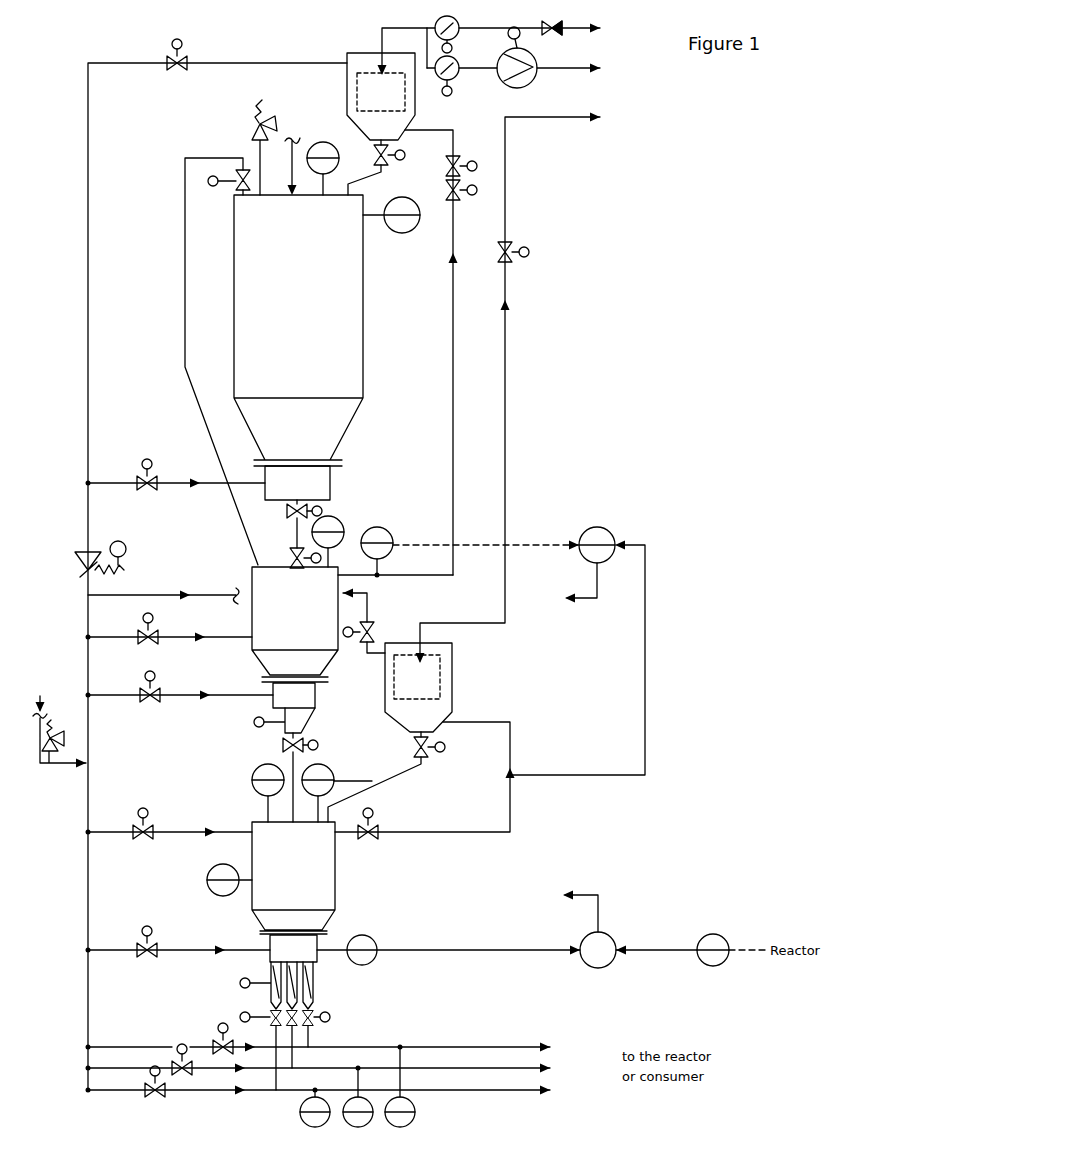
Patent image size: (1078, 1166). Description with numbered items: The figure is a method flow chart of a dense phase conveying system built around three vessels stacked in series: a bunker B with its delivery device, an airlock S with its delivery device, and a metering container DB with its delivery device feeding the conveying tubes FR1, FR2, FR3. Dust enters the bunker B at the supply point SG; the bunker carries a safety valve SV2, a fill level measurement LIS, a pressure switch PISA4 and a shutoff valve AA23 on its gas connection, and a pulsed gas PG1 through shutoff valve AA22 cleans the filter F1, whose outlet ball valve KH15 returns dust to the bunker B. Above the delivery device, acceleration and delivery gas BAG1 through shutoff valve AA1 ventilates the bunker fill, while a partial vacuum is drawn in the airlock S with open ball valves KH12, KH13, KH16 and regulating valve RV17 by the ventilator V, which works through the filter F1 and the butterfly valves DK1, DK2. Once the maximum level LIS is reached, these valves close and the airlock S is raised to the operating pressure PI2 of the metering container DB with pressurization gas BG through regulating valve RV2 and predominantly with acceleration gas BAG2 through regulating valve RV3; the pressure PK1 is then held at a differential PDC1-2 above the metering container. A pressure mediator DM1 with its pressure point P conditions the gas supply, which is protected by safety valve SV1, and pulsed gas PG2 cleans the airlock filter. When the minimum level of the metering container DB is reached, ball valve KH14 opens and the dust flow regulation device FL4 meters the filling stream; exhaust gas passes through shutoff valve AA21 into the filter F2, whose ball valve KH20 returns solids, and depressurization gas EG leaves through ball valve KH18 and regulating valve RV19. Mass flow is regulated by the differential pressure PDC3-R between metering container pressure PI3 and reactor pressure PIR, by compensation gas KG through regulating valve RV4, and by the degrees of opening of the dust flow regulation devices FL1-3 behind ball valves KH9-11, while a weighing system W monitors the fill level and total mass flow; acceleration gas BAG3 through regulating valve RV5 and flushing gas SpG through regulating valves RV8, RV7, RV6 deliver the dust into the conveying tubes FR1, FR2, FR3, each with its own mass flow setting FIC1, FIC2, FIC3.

The pulsed gas for filter cleaning PG1 is at (217, 568).
The shutoff valve AA22 is at (179, 66).
The filter F1 is at (387, 84).
The ball valve KH15 is at (384, 167).
The butterfly valve DK1 is at (455, 34).
The butterfly valve DK2 is at (455, 76).
The ventilator V is at (529, 68).
The safety valve SV2 is at (272, 143).
The dust supply device SG is at (299, 158).
The fill level measuring point LIS is at (297, 481).
The shutoff valve AA23 is at (221, 361).
The bunker B is at (298, 330).
The pressure measuring point PISA4 is at (391, 215).
The ball valve KH16 is at (448, 352).
The regulating valve RV17 is at (466, 197).
The regulating valve RV19 is at (510, 389).
The acceleration and delivery gas BAG1 is at (176, 476).
The shutoff valve AA1 is at (145, 484).
The ball valve KH12 is at (286, 524).
The ball valve KH13 is at (288, 552).
The pressure measuring point PK1 is at (377, 552).
The depressurization gas EG is at (422, 695).
The differential pressure regulation PDC1-2 is at (519, 652).
The regulating valve RV2 is at (366, 613).
The pressure mediator DM1 is at (84, 565).
The pressure measuring point P is at (118, 553).
The pulsed gas for filter cleaning PG2 is at (163, 589).
The pressurization gas BG is at (170, 630).
The airlock S is at (295, 624).
The shutoff valve AA21 is at (369, 621).
The filter F2 is at (418, 687).
The ball valve KH20 is at (396, 777).
The acceleration/delivery gas BAG2 is at (180, 688).
The regulating valve RV3 is at (150, 696).
The dust flow regulation device FL4 is at (291, 720).
The ball valve KH14 is at (318, 777).
The pressure measuring point PI2 is at (337, 793).
The metering container DB is at (286, 836).
The compensation gas KG is at (170, 825).
The regulating valve RV4 is at (144, 833).
The ball valve KH18 is at (369, 834).
The weighing system W is at (229, 880).
The acceleration/delivery gas BAG3 is at (179, 943).
The regulating valve RV5 is at (147, 951).
The pressure measuring point PI3 is at (362, 950).
The differential pressure regulation PDC3-R is at (561, 928).
The reactor pressure measuring point PIR is at (731, 950).
The dust flow regulation devices FL1-3 is at (304, 985).
The ball valves KH9-11 is at (309, 1019).
The flushing or conveyor gas SpG is at (198, 1038).
The regulating valve RV8 is at (219, 1038).
The regulating valve RV7 is at (190, 1067).
The regulating valve RV6 is at (182, 1090).
The conveying tube FR1 is at (432, 1062).
The conveying tube FR2 is at (440, 1051).
The conveying tube FR3 is at (448, 1041).
The mass flow controller FIC1 is at (315, 1108).
The mass flow controller FIC2 is at (358, 1097).
The mass flow controller FIC3 is at (400, 1086).
The safety valve SV1 is at (56, 716).